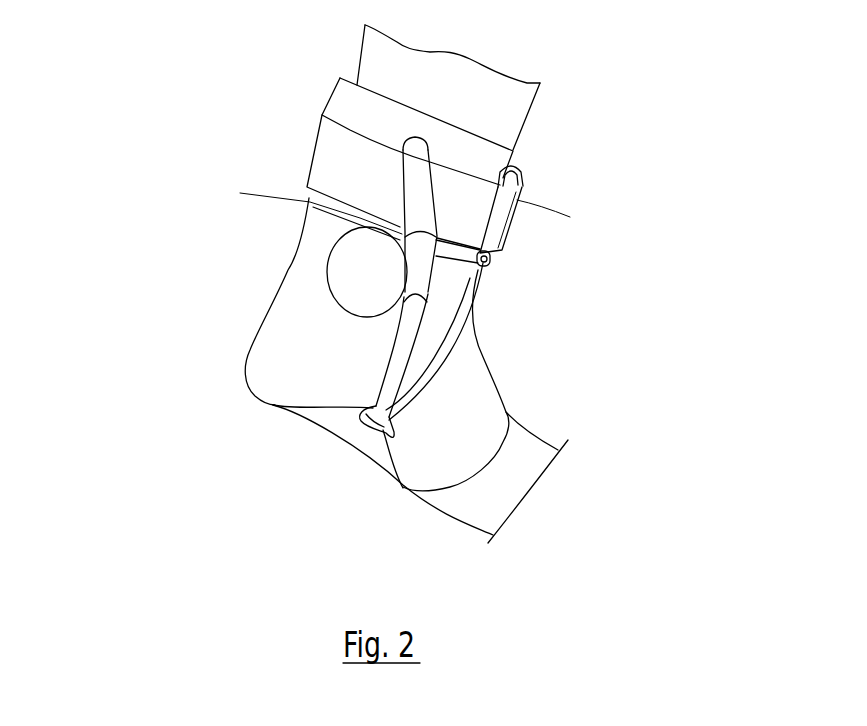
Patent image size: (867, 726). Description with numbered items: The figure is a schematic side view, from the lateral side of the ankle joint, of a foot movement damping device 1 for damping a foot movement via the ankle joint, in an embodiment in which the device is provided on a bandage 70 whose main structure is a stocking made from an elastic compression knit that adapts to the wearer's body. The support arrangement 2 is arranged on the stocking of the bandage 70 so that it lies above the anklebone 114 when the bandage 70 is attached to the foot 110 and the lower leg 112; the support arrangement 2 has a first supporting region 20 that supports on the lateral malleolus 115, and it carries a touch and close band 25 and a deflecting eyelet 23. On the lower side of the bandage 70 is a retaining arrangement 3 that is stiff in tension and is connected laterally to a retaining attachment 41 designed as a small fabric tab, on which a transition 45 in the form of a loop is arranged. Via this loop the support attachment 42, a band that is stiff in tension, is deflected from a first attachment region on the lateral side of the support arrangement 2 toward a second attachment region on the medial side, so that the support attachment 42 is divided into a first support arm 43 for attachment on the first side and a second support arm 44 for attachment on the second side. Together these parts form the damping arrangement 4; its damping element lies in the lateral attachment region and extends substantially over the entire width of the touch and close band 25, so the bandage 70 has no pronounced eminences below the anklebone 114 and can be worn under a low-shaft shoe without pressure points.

The foot movement damping device 1 is at (717, 259).
The support arrangement 2 is at (228, 114).
The retaining arrangement 3 is at (304, 538).
The damping arrangement 4 is at (622, 326).
The supporting region 20 is at (404, 213).
The deflecting eyelet 23 is at (492, 263).
The touch and close band 25 is at (510, 203).
The retaining attachment 41 is at (343, 440).
The support attachment 42 is at (524, 356).
The first support arm 43 is at (397, 363).
The second support arm 44 is at (467, 315).
The transition 45 is at (363, 406).
The bandage 70 is at (715, 97).
The foot 110 is at (517, 487).
The lower leg 112 is at (528, 83).
The anklebone 114 is at (187, 222).
The lateral malleolus 115 is at (343, 264).